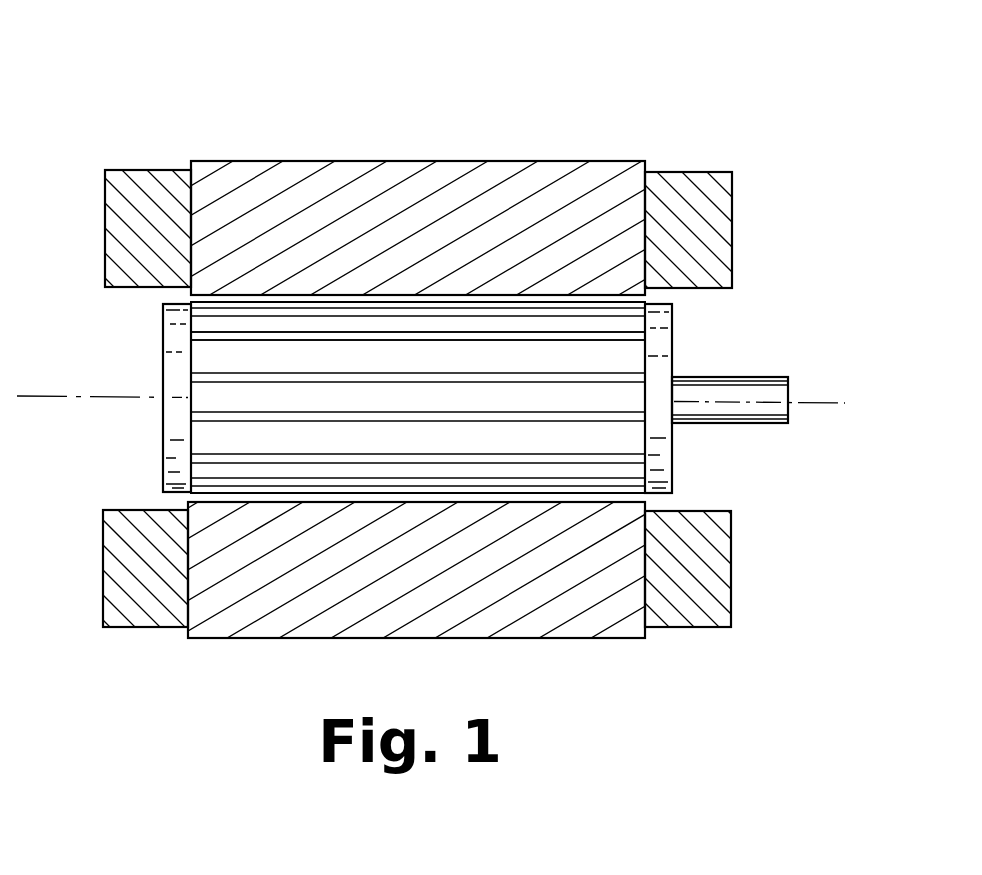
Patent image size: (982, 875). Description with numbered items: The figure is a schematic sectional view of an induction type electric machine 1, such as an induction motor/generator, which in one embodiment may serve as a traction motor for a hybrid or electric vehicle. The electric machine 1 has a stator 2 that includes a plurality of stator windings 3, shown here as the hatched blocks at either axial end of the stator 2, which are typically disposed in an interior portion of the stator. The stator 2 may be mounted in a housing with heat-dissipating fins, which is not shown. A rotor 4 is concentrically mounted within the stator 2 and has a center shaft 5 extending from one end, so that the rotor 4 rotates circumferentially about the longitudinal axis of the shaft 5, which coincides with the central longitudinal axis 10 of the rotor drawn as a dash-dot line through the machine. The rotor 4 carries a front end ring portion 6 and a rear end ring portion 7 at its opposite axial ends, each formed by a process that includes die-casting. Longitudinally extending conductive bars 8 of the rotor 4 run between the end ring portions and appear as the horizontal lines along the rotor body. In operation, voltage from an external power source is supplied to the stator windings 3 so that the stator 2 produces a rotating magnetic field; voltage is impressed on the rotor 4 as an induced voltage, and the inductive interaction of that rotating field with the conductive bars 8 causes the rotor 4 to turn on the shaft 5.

The electric machine 1 is at (233, 66).
The stator 2 is at (462, 185).
The stator windings 3 is at (712, 218).
The rotor 4 is at (270, 357).
The center shaft 5 is at (773, 387).
The front end ring portion 6 is at (662, 340).
The rear end ring portion 7 is at (175, 448).
The conductive bars 8 is at (225, 337).
The central longitudinal axis 10 is at (828, 404).